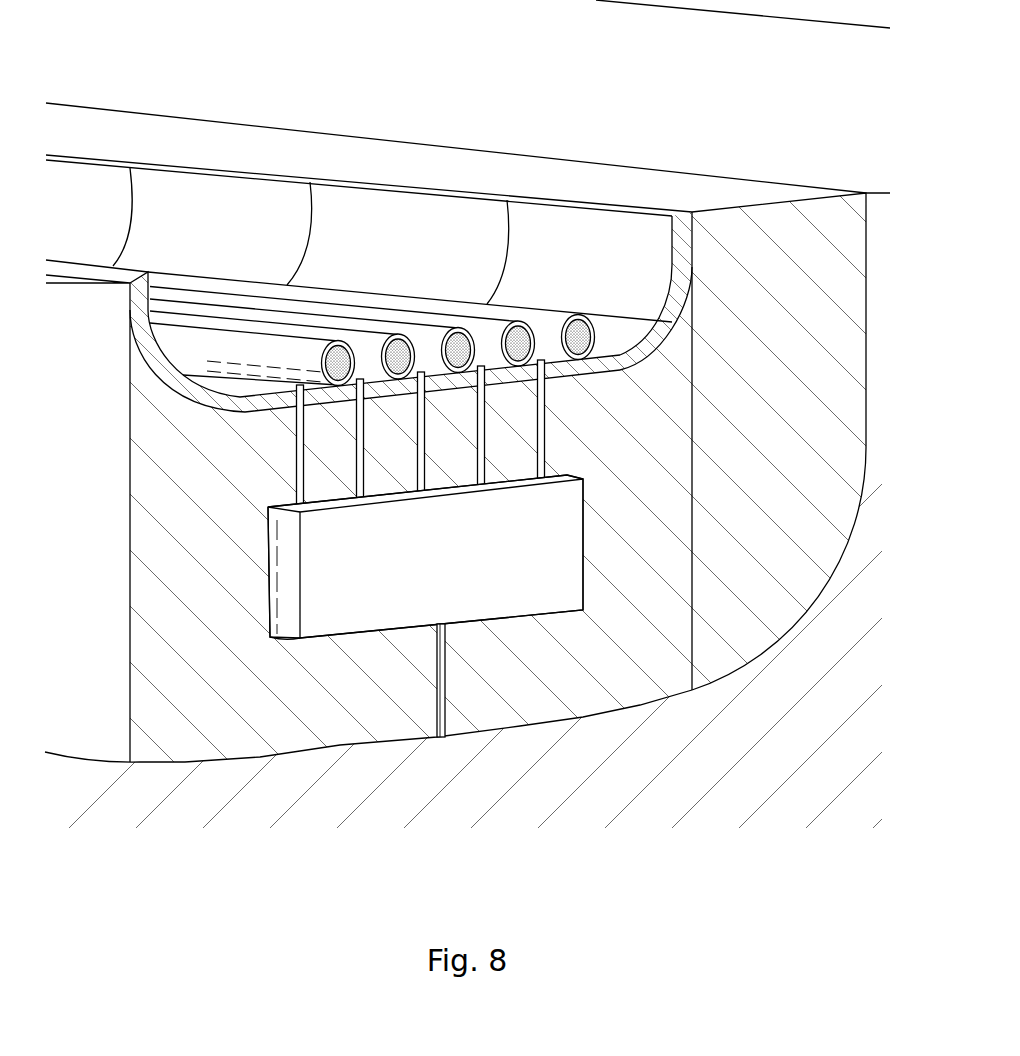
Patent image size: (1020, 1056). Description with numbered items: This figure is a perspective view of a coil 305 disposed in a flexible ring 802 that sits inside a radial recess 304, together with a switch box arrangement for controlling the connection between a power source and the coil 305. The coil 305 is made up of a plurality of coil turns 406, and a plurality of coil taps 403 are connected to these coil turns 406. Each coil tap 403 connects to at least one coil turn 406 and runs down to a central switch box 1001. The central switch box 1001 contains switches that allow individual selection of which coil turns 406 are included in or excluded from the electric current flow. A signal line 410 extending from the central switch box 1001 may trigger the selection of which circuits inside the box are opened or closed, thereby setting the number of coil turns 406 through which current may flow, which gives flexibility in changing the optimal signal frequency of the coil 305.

The radial recess 304 is at (603, 716).
The coil 305 is at (203, 376).
The flexible ring 802 is at (645, 363).
The coil turns 406 is at (603, 325).
The coil taps 403 is at (291, 453).
The central switch box 1001 is at (281, 607).
The signal line 410 is at (455, 682).